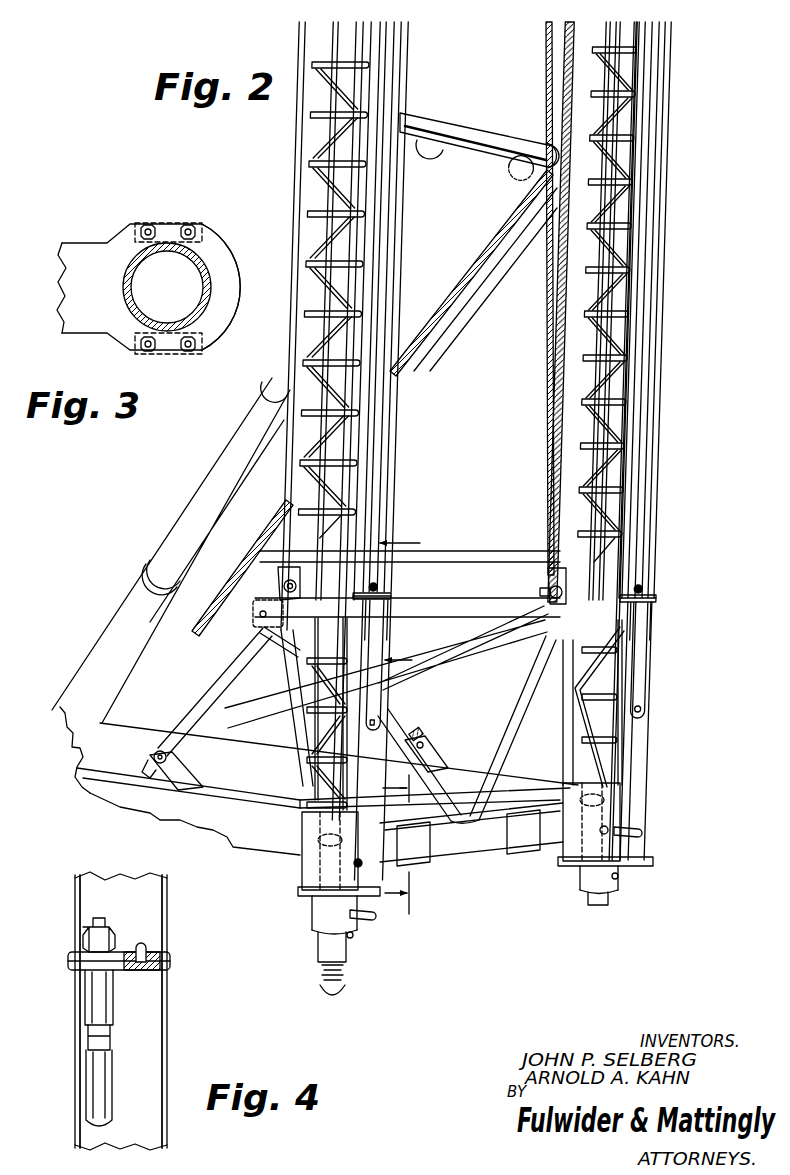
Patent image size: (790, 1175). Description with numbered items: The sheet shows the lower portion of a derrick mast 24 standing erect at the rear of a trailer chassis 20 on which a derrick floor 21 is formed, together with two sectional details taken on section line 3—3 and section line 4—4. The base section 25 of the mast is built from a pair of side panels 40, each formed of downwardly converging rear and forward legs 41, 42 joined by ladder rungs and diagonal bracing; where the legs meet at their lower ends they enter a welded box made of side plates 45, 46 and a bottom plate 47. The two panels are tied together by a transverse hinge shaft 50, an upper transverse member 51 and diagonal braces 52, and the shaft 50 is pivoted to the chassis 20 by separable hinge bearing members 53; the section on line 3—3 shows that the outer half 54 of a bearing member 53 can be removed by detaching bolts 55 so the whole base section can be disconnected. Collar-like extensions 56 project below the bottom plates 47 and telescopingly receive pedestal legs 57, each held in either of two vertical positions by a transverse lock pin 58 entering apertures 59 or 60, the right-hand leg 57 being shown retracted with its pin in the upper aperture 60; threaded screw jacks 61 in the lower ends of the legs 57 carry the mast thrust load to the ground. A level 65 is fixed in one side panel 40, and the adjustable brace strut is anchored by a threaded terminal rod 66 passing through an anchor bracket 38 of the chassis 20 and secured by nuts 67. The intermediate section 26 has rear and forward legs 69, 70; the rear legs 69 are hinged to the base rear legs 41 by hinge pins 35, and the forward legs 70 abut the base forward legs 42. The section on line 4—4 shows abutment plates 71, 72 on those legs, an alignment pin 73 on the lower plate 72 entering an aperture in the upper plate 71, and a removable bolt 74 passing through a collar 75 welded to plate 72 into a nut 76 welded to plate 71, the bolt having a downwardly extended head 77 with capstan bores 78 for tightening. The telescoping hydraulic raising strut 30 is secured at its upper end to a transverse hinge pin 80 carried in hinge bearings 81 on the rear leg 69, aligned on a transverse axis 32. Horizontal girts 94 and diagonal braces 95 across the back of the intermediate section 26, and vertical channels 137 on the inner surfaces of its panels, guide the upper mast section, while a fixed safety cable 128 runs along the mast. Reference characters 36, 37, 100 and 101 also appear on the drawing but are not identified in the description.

In FIG. 2, the section line 3— 3 is at (396, 844).
In FIG. 2, the section line 4— 4 is at (400, 592).
In FIG. 2, the trailer chassis 20 is at (200, 815).
In FIG. 2, the derrick floor 21 is at (308, 781).
In FIG. 2, the derrick mast 24 is at (651, 441).
In FIG. 2, the base section 25 is at (678, 750).
In FIG. 2, the intermediate section 26 is at (672, 444).
In FIG. 2, the hydraulic raising strut 30 is at (186, 521).
In FIG. 2, the transverse axis 32 is at (479, 136).
In FIG. 2, the hinge pins 35 is at (286, 588).
In FIG. 2, the brace 36 is at (218, 665).
In FIG. 2, the bracket plate 37 is at (260, 614).
In FIG. 2, the anchor bracket 38 is at (176, 759).
In FIG. 2, the side panels 40 is at (399, 696).
In FIG. 2, the rear legs 41 is at (566, 712).
In FIG. 2, the forward legs 42 is at (398, 810).
In FIG. 4, the forward legs 42 is at (78, 1068).
In FIG. 2, the side plate 45 is at (300, 876).
In FIG. 2, the side plate 46 is at (366, 894).
In FIG. 2, the bottom plate 47 is at (370, 898).
In FIG. 2, the transverse hinge shaft 50 is at (471, 839).
In FIG. 3, the transverse hinge shaft 50 is at (202, 305).
In FIG. 2, the upper transverse member 51 is at (470, 612).
In FIG. 2, the diagonal braces 52 is at (438, 795).
In FIG. 2, the hinge bearing members 53 is at (430, 836).
In FIG. 3, the hinge bearing members 53 is at (155, 286).
In FIG. 3, the outer half 54 is at (212, 326).
In FIG. 3, the bolts 55 is at (186, 226).
In FIG. 2, the collar-like extensions 56 is at (314, 920).
In FIG. 2, the pedestal leg 57 is at (322, 946).
In FIG. 2, the transverse lock pin 58 is at (368, 912).
In FIG. 2, the aperture 59 is at (352, 938).
In FIG. 2, the upper aperture 60 is at (362, 866).
In FIG. 2, the threaded screw jacks 61 is at (322, 983).
In FIG. 2, the level 65 is at (308, 794).
In FIG. 2, the threaded terminal rod 66 is at (158, 751).
In FIG. 2, the nuts 67 is at (146, 759).
In FIG. 2, the rear legs 69 is at (298, 253).
In FIG. 2, the forward legs 70 is at (399, 268).
In FIG. 4, the forward legs 70 is at (88, 892).
In FIG. 2, the abutment plate 71 is at (398, 597).
In FIG. 4, the abutment plate 71 is at (70, 957).
In FIG. 2, the abutment plate 72 is at (400, 600).
In FIG. 4, the abutment plate 72 is at (70, 966).
In FIG. 4, the alignment pin 73 is at (141, 966).
In FIG. 4, the removable bolt 74 is at (108, 1050).
In FIG. 2, the collar 75 is at (402, 620).
In FIG. 4, the collar 75 is at (90, 998).
In FIG. 2, the nut 76 is at (392, 588).
In FIG. 4, the nut 76 is at (111, 940).
In FIG. 2, the head 77 is at (400, 693).
In FIG. 4, the head 77 is at (108, 1096).
In FIG. 2, the capstan bores 78 is at (458, 717).
In FIG. 2, the transverse hinge pin 80 is at (512, 130).
In FIG. 2, the hinge bearings 81 is at (548, 130).
In FIG. 2, the horizontal girts 94 is at (468, 556).
In FIG. 2, the diagonal braces 95 is at (455, 321).
In FIG. 2, the guide rod 100 is at (546, 36).
In FIG. 2, the roller 101 is at (518, 176).
In FIG. 2, the safety cable 128 is at (568, 450).
In FIG. 2, the vertical channels 137 is at (360, 435).